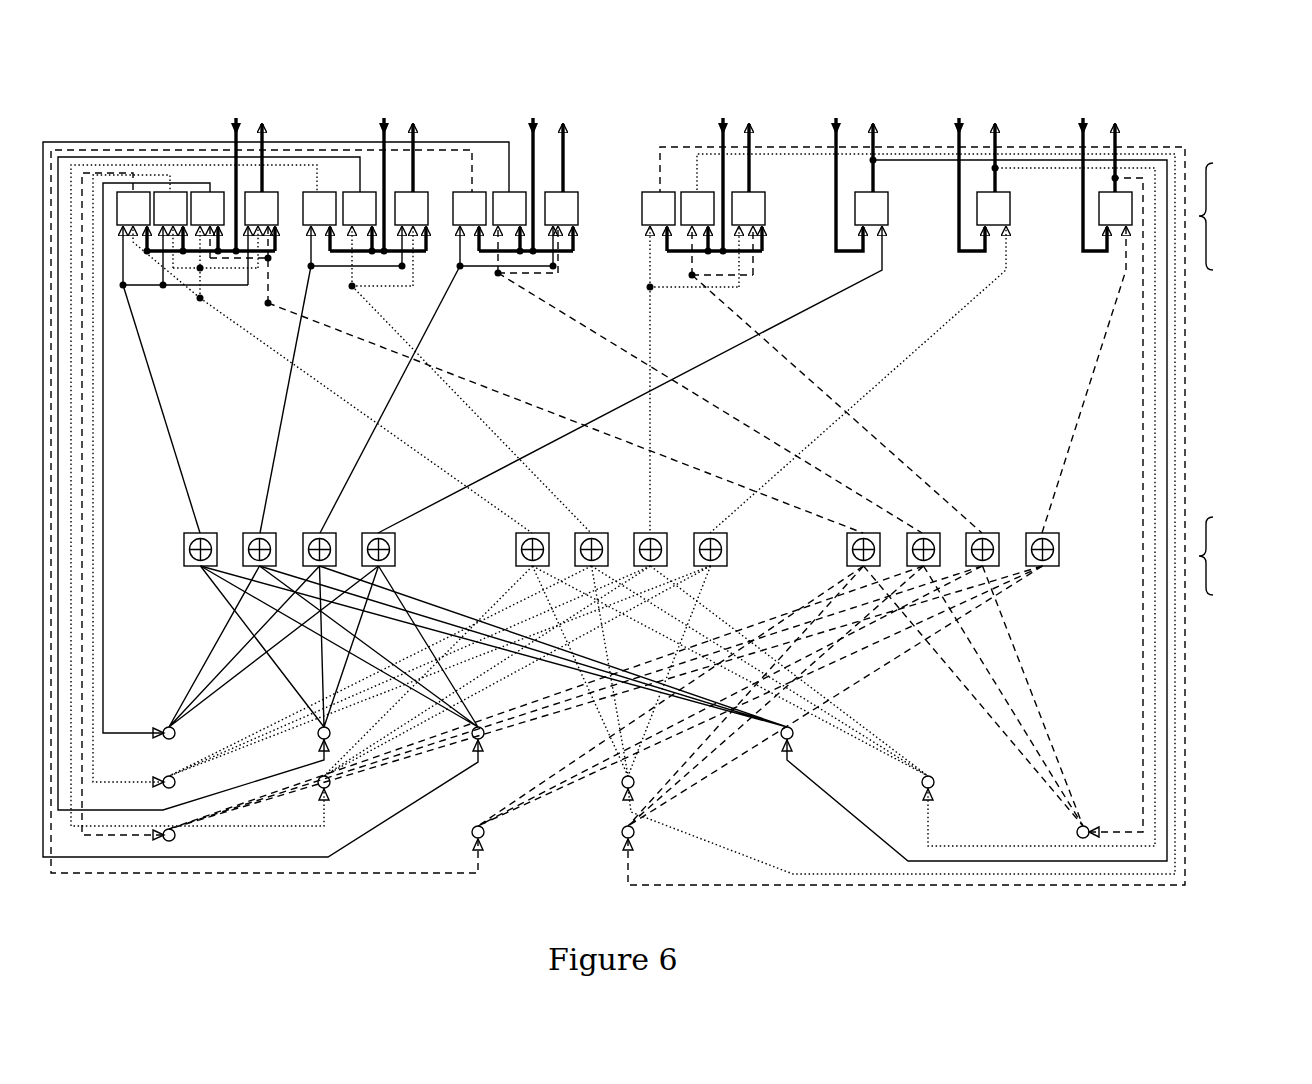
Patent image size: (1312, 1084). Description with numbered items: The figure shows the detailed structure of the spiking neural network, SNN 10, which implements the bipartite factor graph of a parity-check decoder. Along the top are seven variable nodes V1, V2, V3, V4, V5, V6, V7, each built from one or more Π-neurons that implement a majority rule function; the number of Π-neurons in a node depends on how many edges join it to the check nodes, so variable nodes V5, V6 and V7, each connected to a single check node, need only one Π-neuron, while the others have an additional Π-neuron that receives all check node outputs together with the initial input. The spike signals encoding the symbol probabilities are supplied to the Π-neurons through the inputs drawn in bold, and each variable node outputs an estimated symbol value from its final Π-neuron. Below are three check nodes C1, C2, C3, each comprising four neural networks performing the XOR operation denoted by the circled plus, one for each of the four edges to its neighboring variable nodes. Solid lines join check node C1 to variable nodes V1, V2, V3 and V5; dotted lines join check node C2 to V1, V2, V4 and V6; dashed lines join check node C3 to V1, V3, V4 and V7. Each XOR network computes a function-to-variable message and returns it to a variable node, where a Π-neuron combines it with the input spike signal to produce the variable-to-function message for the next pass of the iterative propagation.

The SNN 10 is at (668, 471).
The variable node V1 is at (115, 95).
The variable node V2 is at (432, 95).
The variable node V3 is at (453, 95).
The variable node V4 is at (640, 95).
The variable node V5 is at (856, 154).
The variable node V6 is at (978, 154).
The variable node V7 is at (1101, 154).
The check node C1 is at (305, 549).
The check node C2 is at (638, 549).
The check node C3 is at (969, 549).